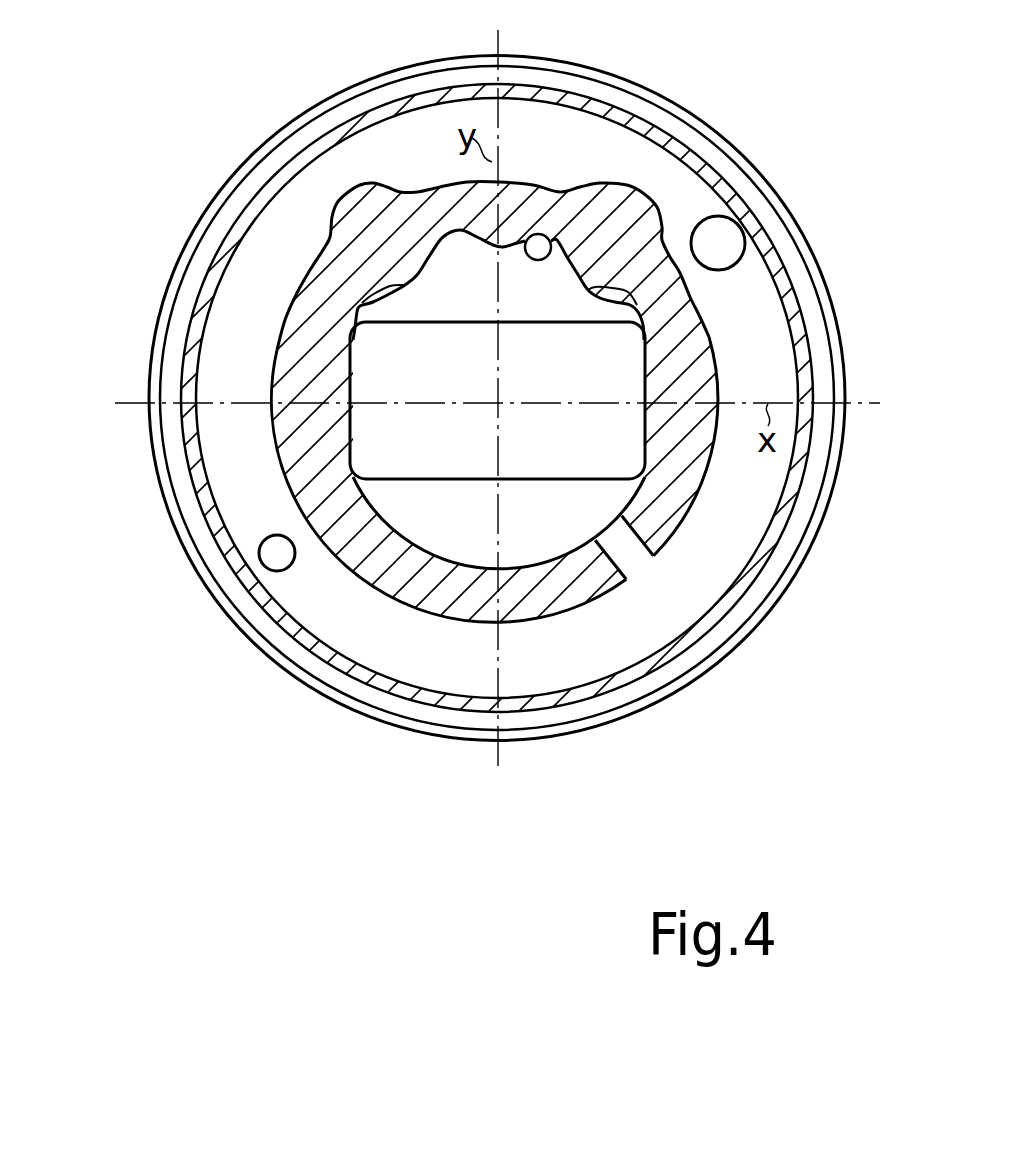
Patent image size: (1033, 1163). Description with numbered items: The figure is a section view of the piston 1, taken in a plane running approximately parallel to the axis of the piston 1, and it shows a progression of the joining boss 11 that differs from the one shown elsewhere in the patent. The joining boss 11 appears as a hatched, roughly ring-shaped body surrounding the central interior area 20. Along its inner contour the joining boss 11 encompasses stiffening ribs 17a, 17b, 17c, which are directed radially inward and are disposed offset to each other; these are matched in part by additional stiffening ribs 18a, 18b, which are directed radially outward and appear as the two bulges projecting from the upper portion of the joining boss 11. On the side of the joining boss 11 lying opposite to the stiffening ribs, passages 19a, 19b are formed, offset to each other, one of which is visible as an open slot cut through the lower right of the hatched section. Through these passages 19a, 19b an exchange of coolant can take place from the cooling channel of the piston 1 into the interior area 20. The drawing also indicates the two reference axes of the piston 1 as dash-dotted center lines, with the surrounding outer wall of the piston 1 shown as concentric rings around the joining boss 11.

The piston 1 is at (785, 168).
The joining boss 11 is at (680, 460).
The stiffening rib 17a is at (357, 304).
The stiffening rib 17b is at (551, 240).
The stiffening rib 17c is at (605, 300).
The additional stiffening rib 18a is at (349, 178).
The additional stiffening rib 18b is at (662, 184).
The passage 19a is at (357, 560).
The passage 19b is at (633, 563).
The interior area 20 is at (575, 530).